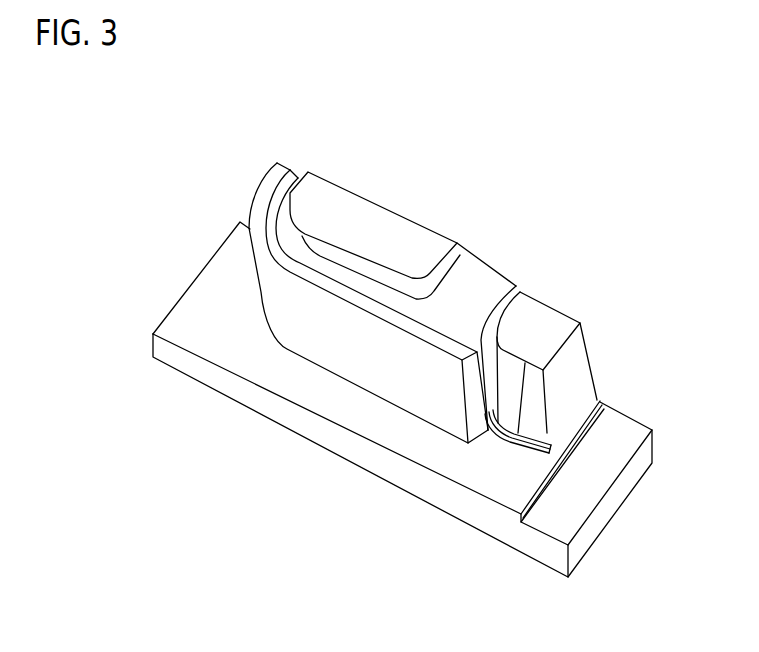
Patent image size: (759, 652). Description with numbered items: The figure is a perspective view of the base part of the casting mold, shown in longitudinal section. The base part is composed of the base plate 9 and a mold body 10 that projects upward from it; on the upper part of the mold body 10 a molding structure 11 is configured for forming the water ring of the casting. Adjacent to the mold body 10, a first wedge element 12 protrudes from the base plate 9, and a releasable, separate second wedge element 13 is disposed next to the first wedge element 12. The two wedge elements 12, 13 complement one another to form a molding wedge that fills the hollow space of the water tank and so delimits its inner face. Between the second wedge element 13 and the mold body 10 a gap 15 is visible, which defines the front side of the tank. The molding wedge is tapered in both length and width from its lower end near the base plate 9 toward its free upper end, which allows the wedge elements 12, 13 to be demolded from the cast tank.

The base plate 9 is at (347, 410).
The mold body 10 is at (272, 287).
The molding structure 11 is at (470, 270).
The first wedge element 12 is at (582, 372).
The second wedge element 13 is at (507, 408).
The gap 15 is at (506, 297).